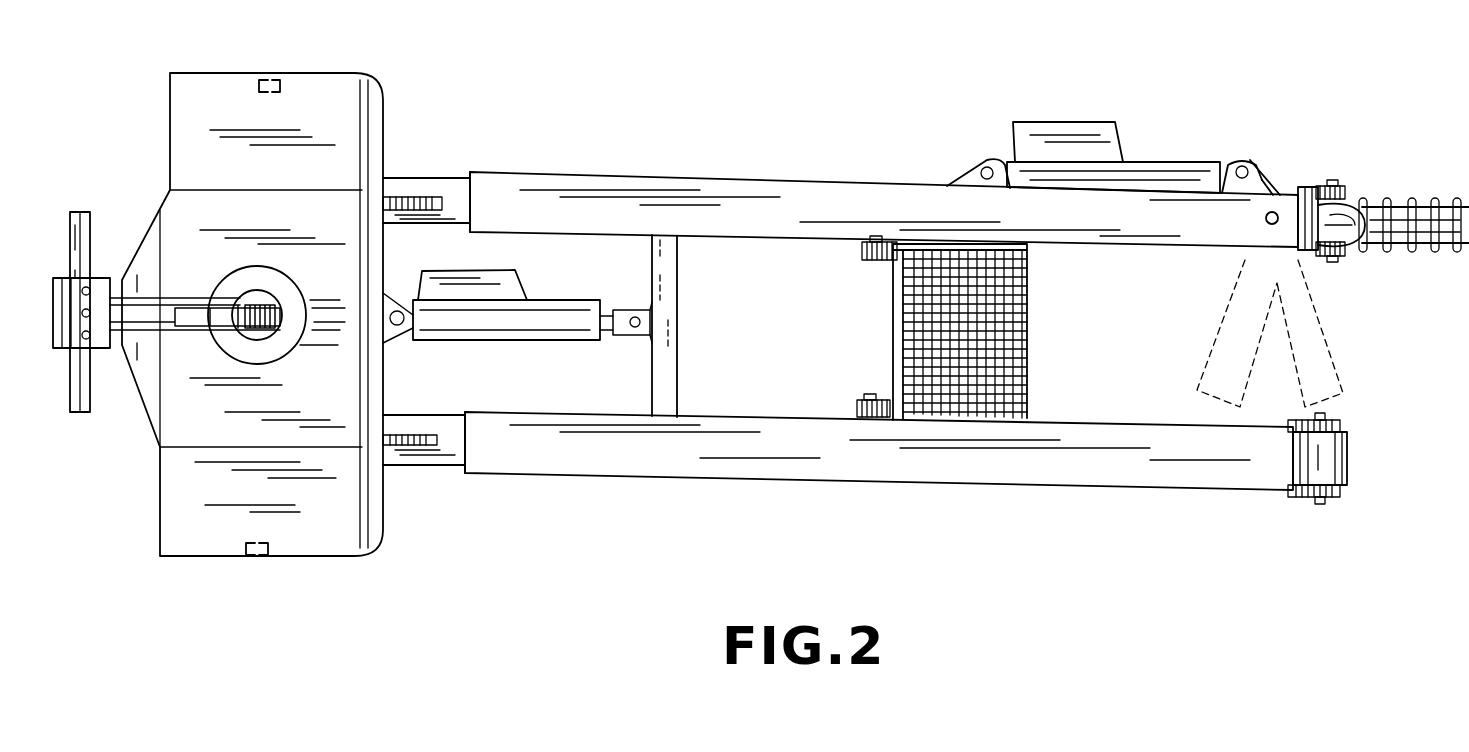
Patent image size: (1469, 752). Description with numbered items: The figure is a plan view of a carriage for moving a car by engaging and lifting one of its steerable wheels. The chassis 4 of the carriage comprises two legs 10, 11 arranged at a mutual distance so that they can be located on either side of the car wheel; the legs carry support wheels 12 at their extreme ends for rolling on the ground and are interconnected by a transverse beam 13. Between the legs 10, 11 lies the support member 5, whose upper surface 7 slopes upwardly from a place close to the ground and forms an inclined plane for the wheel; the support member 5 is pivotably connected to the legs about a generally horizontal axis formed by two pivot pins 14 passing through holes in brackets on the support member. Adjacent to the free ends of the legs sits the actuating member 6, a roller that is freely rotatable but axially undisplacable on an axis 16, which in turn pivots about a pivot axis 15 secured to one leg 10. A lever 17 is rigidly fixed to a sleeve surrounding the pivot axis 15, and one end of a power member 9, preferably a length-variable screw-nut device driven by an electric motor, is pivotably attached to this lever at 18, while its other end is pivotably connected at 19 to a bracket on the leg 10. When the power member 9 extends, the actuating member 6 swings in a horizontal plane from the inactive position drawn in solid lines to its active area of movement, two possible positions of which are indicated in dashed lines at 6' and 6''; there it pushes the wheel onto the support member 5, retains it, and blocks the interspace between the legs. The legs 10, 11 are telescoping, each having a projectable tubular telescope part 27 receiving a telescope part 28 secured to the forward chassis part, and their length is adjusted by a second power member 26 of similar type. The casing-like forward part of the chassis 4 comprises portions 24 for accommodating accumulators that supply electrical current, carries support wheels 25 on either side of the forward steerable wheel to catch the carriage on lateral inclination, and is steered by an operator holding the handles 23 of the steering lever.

The chassis 4 is at (881, 353).
The support member 5 is at (991, 332).
The actuating member 6 is at (1393, 242).
The actuating member in active position 6' is at (1339, 333).
The actuating member in active position 6'' is at (1207, 333).
The upper surface 7 is at (980, 370).
The power member 9 is at (1085, 130).
The leg 10 is at (768, 178).
The leg 11 is at (765, 483).
The support wheel 12 is at (1330, 257).
The transverse beam 13 is at (668, 312).
The pivot pin 14 is at (862, 256).
The pivot axis 15 is at (1264, 216).
The axis 16 is at (1305, 215).
The lever 17 is at (1265, 187).
The pivotal attachment 18 is at (1242, 167).
The pivotal connection 19 is at (985, 168).
The handle 23 is at (90, 213).
The accumulator accommodating portion 24 is at (320, 100).
The support wheel 25 is at (273, 68).
The power member 26 is at (505, 327).
The telescope part 27 is at (522, 182).
The telescope part 28 is at (412, 185).